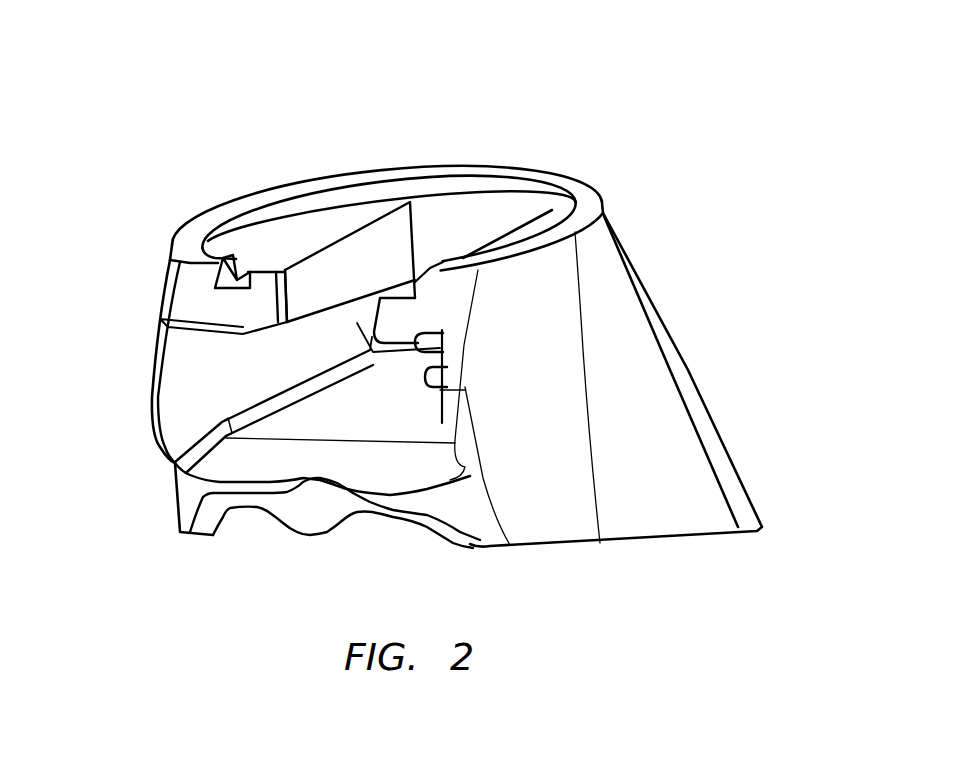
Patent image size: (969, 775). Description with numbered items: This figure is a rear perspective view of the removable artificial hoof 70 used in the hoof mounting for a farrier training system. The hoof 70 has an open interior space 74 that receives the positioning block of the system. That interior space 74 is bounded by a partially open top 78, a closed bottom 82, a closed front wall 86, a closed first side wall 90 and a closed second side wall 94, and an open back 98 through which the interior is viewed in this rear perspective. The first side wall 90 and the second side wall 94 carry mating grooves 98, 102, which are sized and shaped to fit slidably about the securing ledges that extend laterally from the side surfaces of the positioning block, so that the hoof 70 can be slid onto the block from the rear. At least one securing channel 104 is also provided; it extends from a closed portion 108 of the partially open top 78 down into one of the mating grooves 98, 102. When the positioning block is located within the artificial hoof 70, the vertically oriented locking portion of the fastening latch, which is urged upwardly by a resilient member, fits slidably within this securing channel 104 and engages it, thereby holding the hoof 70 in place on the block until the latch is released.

The artificial hoof 70 is at (674, 175).
The partially open top 78 is at (352, 220).
The securing channel 104 is at (268, 265).
The closed portion 108 is at (247, 250).
The open back 98 is at (193, 350).
The first side wall 90 is at (300, 381).
The open interior space 74 is at (198, 401).
The closed front wall 86 is at (357, 322).
The closed bottom 82 is at (291, 428).
The mating groove 102 is at (423, 332).
The second side wall 94 is at (440, 372).